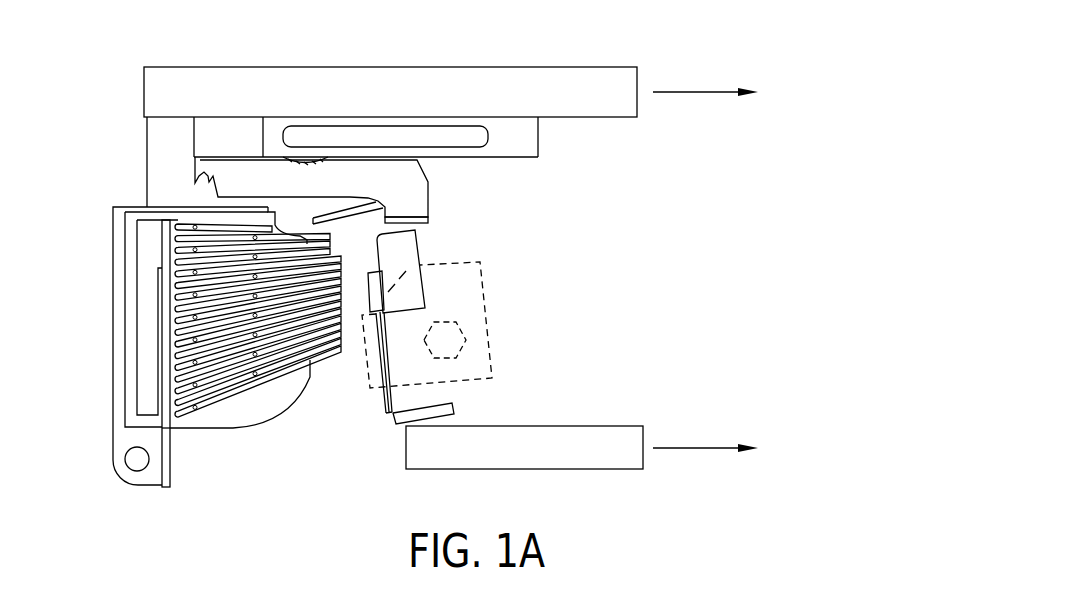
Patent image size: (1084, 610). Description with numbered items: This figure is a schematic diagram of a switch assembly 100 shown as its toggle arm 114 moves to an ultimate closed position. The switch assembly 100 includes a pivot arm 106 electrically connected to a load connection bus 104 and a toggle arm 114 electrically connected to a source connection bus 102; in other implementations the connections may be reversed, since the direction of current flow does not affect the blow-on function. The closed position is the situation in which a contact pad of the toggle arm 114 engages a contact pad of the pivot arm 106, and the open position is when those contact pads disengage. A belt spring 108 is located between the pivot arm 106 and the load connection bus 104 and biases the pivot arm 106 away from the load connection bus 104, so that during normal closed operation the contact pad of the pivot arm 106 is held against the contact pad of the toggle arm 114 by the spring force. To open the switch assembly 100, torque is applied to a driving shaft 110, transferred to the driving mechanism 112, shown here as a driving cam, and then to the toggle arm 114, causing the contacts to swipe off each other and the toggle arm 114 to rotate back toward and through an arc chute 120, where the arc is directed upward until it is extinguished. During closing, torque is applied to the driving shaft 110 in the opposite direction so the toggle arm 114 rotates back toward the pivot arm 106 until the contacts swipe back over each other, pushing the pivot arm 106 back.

The switch assembly 100 is at (104, 58).
The source connection bus 102 is at (603, 452).
The load connection bus 104 is at (530, 142).
The pivot arm 106 is at (413, 205).
The belt spring 108 is at (319, 158).
The driving shaft 110 is at (447, 343).
The driving mechanism 112 is at (485, 302).
The toggle arm 114 is at (422, 253).
The arc chute 120 is at (118, 420).